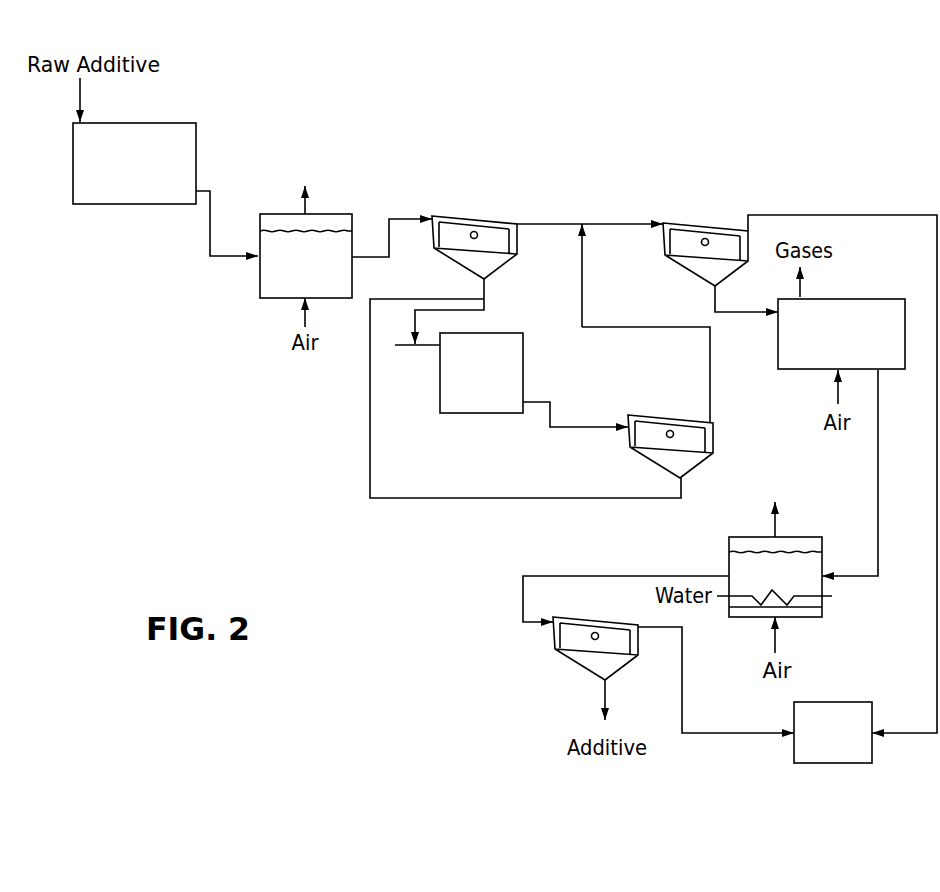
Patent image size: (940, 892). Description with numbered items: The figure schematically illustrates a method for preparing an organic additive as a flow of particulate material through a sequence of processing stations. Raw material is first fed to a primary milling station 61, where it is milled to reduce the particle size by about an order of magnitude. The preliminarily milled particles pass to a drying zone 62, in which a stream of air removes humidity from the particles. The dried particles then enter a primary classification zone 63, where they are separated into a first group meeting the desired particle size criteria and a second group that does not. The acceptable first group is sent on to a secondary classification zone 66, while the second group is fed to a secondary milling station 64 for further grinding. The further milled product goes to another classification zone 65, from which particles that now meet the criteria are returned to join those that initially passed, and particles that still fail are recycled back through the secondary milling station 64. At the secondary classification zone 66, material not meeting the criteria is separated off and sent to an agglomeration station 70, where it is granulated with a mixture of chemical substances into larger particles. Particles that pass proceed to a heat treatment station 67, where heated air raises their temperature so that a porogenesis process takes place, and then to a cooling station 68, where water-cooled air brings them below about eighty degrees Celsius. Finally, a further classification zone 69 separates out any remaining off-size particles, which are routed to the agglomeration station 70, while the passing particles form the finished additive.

The primary milling station 61 is at (134, 163).
The drying zone 62 is at (306, 256).
The primary classification zone 63 is at (474, 247).
The secondary milling station 64 is at (481, 373).
The classification zone 65 is at (670, 446).
The secondary classification zone 66 is at (705, 254).
The heat treatment station 67 is at (841, 334).
The cooling station 68 is at (775, 577).
The classification zone 69 is at (595, 648).
The agglomeration station 70 is at (833, 732).